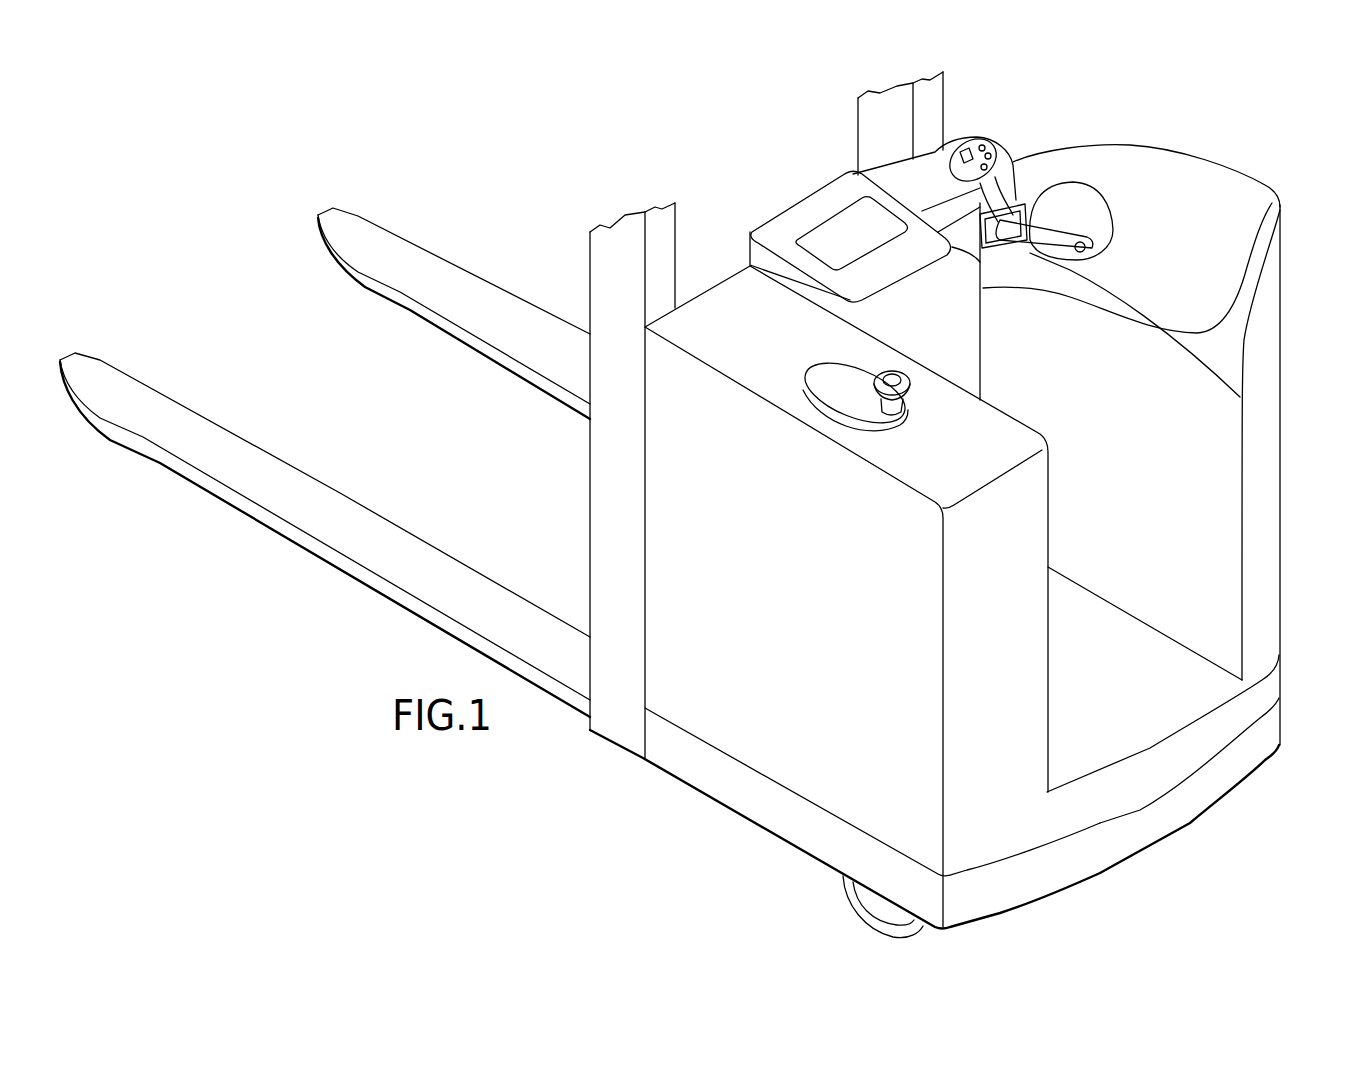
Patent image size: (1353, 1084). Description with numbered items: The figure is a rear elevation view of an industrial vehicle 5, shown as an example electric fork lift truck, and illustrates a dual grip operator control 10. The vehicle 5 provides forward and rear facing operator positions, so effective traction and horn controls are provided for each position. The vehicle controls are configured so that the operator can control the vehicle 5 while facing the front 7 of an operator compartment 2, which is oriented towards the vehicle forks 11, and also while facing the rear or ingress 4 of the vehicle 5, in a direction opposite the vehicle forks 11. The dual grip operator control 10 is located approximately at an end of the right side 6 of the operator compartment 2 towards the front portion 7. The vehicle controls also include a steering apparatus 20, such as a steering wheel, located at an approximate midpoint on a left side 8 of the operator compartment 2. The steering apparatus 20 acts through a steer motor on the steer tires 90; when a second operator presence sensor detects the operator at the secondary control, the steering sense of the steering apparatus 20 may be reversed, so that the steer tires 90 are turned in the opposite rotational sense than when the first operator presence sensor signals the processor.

The operator compartment 2 is at (1122, 347).
The rear or ingress 4 is at (1220, 577).
The industrial vehicle 5 is at (1268, 136).
The right side 6 is at (1163, 167).
The front 7 is at (810, 207).
The left side 8 is at (990, 427).
The dual grip operator control 10 is at (1063, 222).
The vehicle forks 11 is at (386, 222).
The steering apparatus 20 is at (807, 370).
The steer tires 90 is at (867, 923).